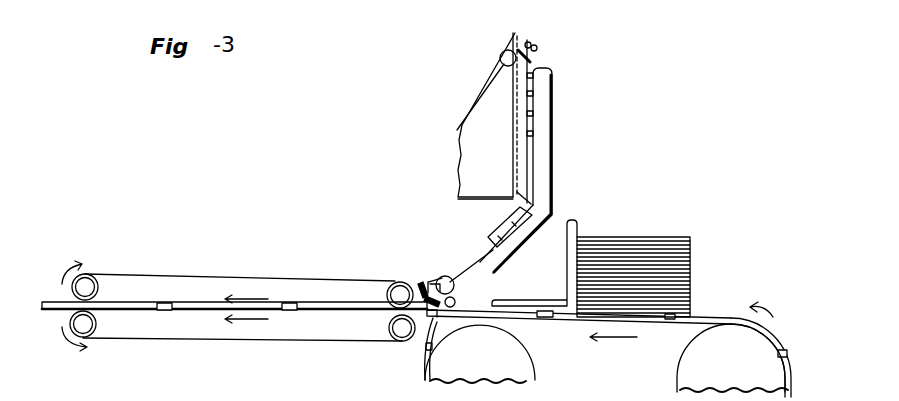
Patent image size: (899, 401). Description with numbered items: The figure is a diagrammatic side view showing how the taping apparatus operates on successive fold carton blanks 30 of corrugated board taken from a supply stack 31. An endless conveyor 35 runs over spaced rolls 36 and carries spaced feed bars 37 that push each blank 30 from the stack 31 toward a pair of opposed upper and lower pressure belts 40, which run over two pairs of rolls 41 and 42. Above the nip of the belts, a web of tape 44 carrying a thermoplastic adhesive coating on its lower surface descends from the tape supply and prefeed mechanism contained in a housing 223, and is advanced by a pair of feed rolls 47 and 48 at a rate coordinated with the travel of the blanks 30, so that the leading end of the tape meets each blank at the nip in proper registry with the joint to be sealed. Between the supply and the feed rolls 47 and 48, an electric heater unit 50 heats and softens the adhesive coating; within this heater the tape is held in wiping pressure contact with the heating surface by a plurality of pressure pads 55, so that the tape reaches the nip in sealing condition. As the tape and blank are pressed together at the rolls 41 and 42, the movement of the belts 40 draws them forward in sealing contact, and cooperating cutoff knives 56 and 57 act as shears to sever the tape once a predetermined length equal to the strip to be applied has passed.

The fold carton blank 30 is at (55, 302).
The pressure belts 40 is at (215, 276).
The rolls 42 is at (90, 282).
The rolls 41 is at (392, 285).
The cutoff knife 56 is at (422, 290).
The feed roll 47 is at (442, 278).
The feed roll 48 is at (455, 300).
The cutoff knife 57 is at (432, 318).
The endless conveyor 35 is at (554, 325).
The feed bars 37 is at (672, 322).
The rolls 36 is at (528, 370).
The pressure pads 55 is at (609, 390).
The supply stack 31 is at (678, 237).
The web of tape 44 is at (483, 88).
The electric heater unit 50 is at (543, 107).
The housing 223 is at (460, 137).